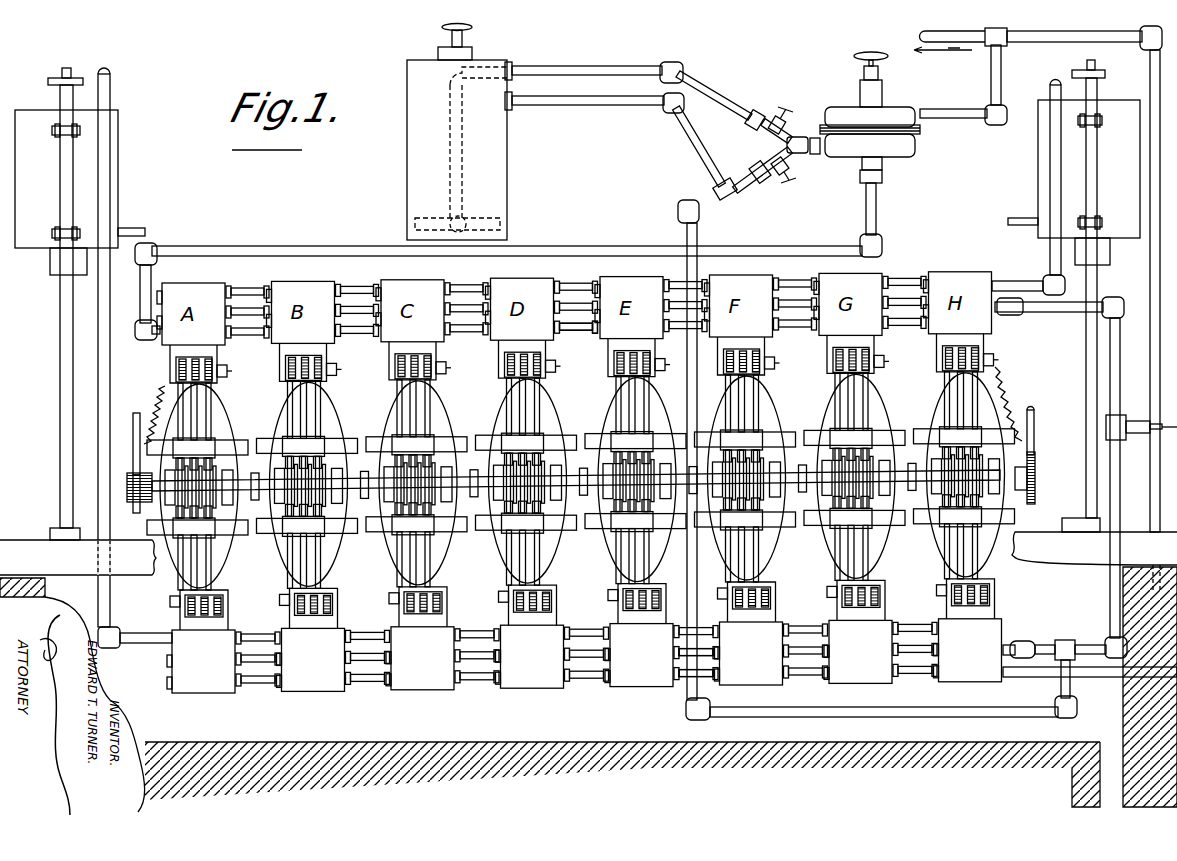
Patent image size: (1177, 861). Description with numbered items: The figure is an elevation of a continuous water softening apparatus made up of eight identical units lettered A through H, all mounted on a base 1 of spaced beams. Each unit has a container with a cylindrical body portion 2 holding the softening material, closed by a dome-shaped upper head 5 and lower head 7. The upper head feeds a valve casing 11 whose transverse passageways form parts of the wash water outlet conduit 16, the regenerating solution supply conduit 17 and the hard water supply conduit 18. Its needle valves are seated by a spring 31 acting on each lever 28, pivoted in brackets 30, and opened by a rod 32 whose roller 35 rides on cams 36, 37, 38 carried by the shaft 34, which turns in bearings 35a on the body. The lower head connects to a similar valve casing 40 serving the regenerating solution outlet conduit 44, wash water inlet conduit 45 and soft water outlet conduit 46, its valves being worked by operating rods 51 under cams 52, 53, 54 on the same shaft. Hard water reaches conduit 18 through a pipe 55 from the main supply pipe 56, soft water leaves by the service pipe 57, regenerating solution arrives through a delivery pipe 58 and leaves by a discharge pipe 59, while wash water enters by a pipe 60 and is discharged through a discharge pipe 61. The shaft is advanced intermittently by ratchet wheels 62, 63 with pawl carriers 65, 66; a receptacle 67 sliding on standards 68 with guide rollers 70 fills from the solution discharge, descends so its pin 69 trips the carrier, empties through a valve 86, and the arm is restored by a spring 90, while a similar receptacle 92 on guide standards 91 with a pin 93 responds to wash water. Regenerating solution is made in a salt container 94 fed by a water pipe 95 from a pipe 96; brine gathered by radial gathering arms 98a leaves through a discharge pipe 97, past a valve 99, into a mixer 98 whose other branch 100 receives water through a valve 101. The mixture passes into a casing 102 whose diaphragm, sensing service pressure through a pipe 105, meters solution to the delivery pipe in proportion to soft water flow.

The base 1 is at (15, 558).
The cylindrical body portion 2 is at (228, 460).
The upper head 5 is at (219, 413).
The lower head 7 is at (231, 555).
The valve casing 11 is at (177, 288).
The outlet conduit for wash water 16 is at (576, 297).
The supply conduit for regenerating solution 17 is at (585, 338).
The supply conduit for water to be softened 18 is at (561, 326).
The lever 28 is at (233, 375).
The brackets 30 is at (331, 599).
The spring 31 is at (175, 375).
The rod 32 is at (286, 409).
The shaft 34 is at (805, 489).
The roller 35 is at (875, 478).
The bearings 35a is at (766, 474).
The cam 36 is at (395, 484).
The cam 37 is at (617, 482).
The cam 38 is at (434, 490).
The valve casing 40 is at (193, 682).
The outlet conduit for regenerating solution 44 is at (697, 644).
The inlet conduit for wash water 45 is at (717, 651).
The outlet conduit for soft water 46 is at (703, 683).
The operating rods 51 is at (287, 566).
The cam 52 is at (329, 486).
The cam 53 is at (514, 475).
The cam 54 is at (551, 484).
The pipe 55 is at (1116, 358).
The main supply pipe 56 is at (1138, 440).
The service pipe 57 is at (1043, 41).
The delivery pipe 58 is at (218, 258).
The discharge pipe 59 is at (111, 93).
The pipe 60 is at (1086, 645).
The discharge pipe 61 is at (1050, 252).
The ratchet wheel 62 is at (140, 502).
The ratchet wheel 63 is at (1036, 497).
The pawl carrier 65 is at (136, 428).
The pawl carrier 66 is at (1033, 438).
The receptacle 67 is at (118, 175).
The standards 68 is at (68, 173).
The pin 69 is at (125, 230).
The guide rollers 70 is at (56, 137).
The valve 86 is at (55, 270).
The spring 90 is at (162, 386).
The guide standards 91 is at (1093, 294).
The receptacle 92 is at (1041, 160).
The pin 93 is at (1020, 226).
The salt container 94 is at (421, 150).
The water pipe 95 is at (628, 106).
The pipe 96 is at (717, 200).
The discharge pipe 97 is at (530, 72).
The mixer 98 is at (803, 131).
The radial gathering arms 98a is at (500, 222).
The valve 99 is at (778, 116).
The branch 100 is at (796, 170).
The valve 101 is at (771, 167).
The casing 102 is at (886, 115).
The pipe 105 is at (966, 115).